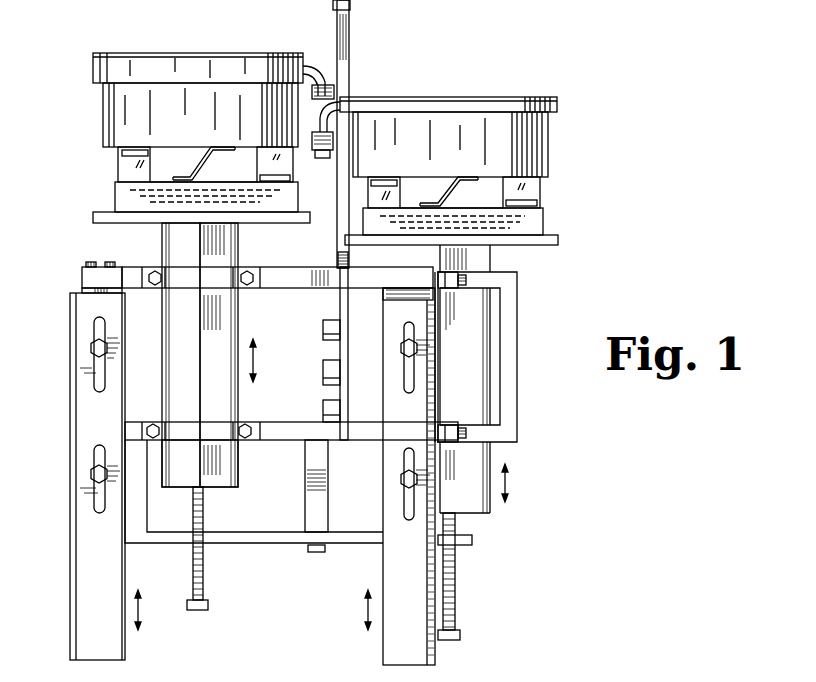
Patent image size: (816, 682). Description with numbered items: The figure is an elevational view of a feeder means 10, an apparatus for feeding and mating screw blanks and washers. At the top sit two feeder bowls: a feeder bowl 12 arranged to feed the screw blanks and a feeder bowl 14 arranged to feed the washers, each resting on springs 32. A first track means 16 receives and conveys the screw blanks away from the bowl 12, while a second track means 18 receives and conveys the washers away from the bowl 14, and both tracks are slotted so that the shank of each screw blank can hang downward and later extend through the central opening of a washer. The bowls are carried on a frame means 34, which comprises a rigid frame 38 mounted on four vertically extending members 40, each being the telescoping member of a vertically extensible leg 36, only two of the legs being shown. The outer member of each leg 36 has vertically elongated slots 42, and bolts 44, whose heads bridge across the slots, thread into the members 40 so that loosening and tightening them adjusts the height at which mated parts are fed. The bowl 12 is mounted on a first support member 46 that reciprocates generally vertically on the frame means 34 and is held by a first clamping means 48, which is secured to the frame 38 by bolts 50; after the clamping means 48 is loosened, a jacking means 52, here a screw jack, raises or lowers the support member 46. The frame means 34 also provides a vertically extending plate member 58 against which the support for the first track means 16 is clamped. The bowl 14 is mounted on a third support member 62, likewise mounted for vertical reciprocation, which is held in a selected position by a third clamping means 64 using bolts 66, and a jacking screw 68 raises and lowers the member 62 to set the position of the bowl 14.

The feeder means 10 is at (440, 57).
The feeder bowl 12 is at (117, 108).
The feeder bowl 14 is at (535, 152).
The first track means 16 is at (315, 70).
The second track means 18 is at (340, 94).
The springs 32 is at (142, 177).
The frame means 34 is at (522, 444).
The vertically extensible legs 36 is at (85, 614).
The rigid frame 38 is at (290, 283).
The vertically extending members 40 is at (82, 287).
The vertically elongated slots 42 is at (93, 368).
The bolts 44 is at (93, 347).
The first support member 46 is at (232, 384).
The first clamping means 48 is at (185, 280).
The bolts 50 is at (154, 270).
The jacking means 52 is at (203, 574).
The plate member 58 is at (350, 42).
The third support member 62 is at (475, 335).
The third clamping means 64 is at (507, 368).
The bolts 66 is at (466, 280).
The jacking screw 68 is at (450, 574).